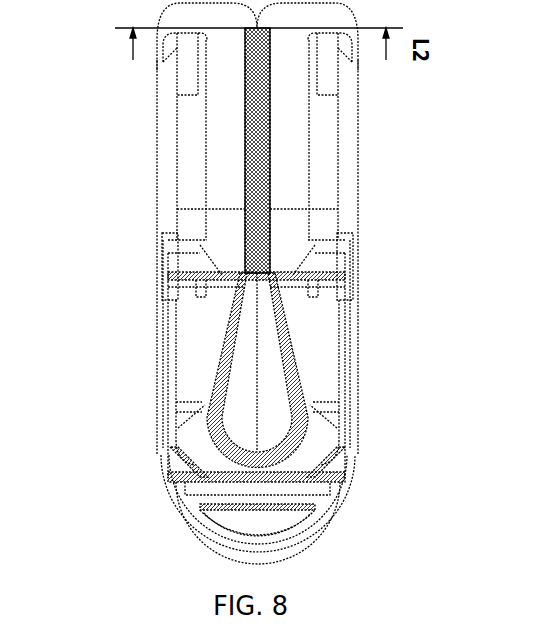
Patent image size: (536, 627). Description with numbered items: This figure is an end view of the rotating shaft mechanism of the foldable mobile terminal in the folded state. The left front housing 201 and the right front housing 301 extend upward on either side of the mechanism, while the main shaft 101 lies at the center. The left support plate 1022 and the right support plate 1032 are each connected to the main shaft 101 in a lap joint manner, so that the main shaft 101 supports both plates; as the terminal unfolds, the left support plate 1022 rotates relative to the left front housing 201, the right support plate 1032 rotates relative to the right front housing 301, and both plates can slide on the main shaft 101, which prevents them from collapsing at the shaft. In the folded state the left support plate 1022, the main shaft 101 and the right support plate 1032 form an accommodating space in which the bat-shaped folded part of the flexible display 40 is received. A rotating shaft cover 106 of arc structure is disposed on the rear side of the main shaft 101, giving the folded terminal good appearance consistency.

The left front housing 201 is at (230, 133).
The right front housing 301 is at (290, 132).
The left support plate 1022 is at (218, 366).
The right support plate 1032 is at (295, 363).
The flexible display 40 is at (288, 447).
The main shaft 101 is at (267, 498).
The rotating shaft cover 106 is at (217, 535).